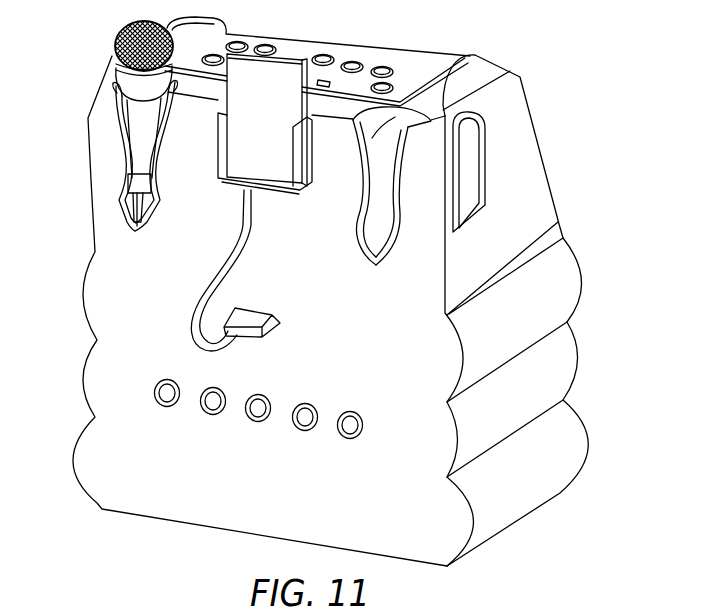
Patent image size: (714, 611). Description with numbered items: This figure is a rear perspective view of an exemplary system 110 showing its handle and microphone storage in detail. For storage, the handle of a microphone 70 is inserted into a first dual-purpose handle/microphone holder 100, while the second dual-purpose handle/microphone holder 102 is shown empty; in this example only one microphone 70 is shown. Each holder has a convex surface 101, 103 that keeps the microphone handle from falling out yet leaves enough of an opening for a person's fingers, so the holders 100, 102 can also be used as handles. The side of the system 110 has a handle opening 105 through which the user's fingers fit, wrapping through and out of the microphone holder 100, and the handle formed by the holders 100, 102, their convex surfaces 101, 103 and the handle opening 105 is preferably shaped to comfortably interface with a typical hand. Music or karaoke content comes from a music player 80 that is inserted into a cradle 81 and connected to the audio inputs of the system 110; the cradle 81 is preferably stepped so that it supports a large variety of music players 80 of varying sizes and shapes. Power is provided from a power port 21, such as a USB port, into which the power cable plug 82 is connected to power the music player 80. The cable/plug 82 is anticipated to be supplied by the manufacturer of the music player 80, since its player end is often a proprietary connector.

The microphone 70 is at (124, 28).
The convex surface 103 is at (128, 158).
The second dual-purpose handle/microphone holder 102 is at (140, 199).
The music player 80 is at (285, 77).
The cradle 81 is at (300, 147).
The power cable plug 82 is at (252, 322).
The power port 21 is at (280, 328).
The first dual-purpose handle/microphone holder 100 is at (374, 220).
The convex surface 101 is at (372, 138).
The handle opening 105 is at (470, 177).
The system 110 is at (533, 294).